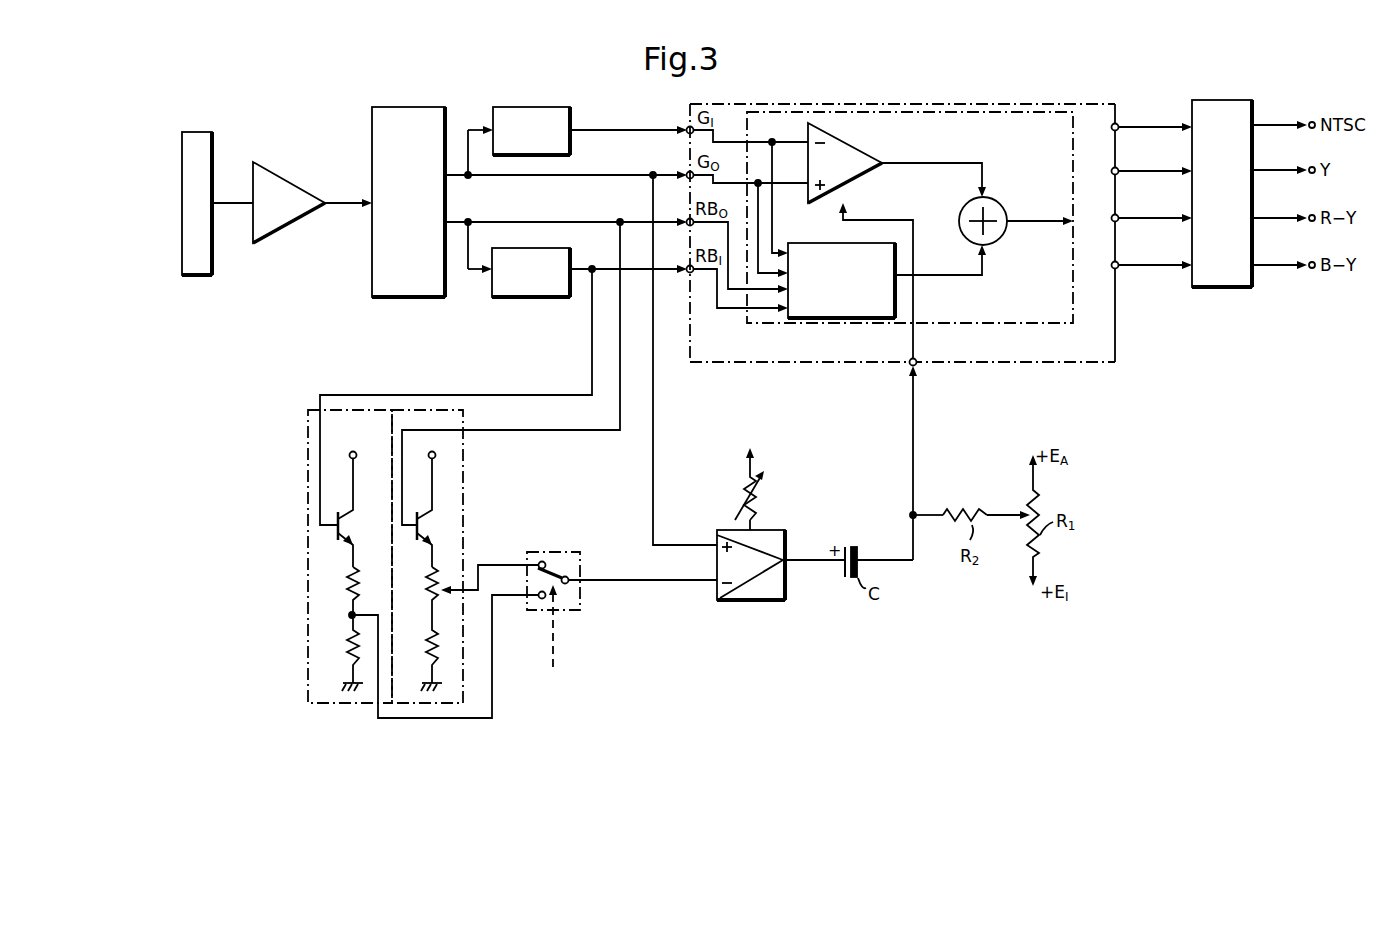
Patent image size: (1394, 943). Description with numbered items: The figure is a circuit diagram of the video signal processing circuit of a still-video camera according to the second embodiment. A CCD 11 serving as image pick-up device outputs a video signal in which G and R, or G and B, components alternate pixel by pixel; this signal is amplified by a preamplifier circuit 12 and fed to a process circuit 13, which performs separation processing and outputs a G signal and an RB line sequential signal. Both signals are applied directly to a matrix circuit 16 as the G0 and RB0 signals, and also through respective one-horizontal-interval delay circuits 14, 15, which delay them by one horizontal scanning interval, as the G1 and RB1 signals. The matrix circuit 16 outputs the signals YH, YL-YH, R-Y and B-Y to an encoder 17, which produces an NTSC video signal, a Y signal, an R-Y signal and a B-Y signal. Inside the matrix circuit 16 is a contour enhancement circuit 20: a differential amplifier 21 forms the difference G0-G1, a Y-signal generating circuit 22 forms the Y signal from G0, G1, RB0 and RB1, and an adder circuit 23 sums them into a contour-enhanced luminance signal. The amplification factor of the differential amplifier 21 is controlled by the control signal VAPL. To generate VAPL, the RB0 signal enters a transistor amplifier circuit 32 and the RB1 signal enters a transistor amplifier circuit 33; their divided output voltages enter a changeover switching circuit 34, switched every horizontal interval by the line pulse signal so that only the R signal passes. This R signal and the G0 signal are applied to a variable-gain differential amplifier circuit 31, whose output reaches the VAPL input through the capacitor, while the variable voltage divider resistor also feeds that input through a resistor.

The CCD 11 is at (220, 140).
The preamplifier circuit 12 is at (308, 190).
The process circuit 13 is at (432, 106).
The 1H delay circuit 14 is at (565, 106).
The 1H delay circuit 15 is at (557, 298).
The matrix circuit 16 is at (940, 102).
The encoder 17 is at (1233, 100).
The contour enhancement circuit 20 is at (899, 235).
The differential amplifier 21 is at (856, 146).
The Y-signal generating circuit 22 is at (812, 243).
The adder circuit 23 is at (961, 212).
The differential amplifier circuit 31 is at (785, 528).
The amplifier circuit 32 is at (463, 507).
The amplifier circuit 33 is at (308, 525).
The changeover switching circuit 34 is at (567, 550).